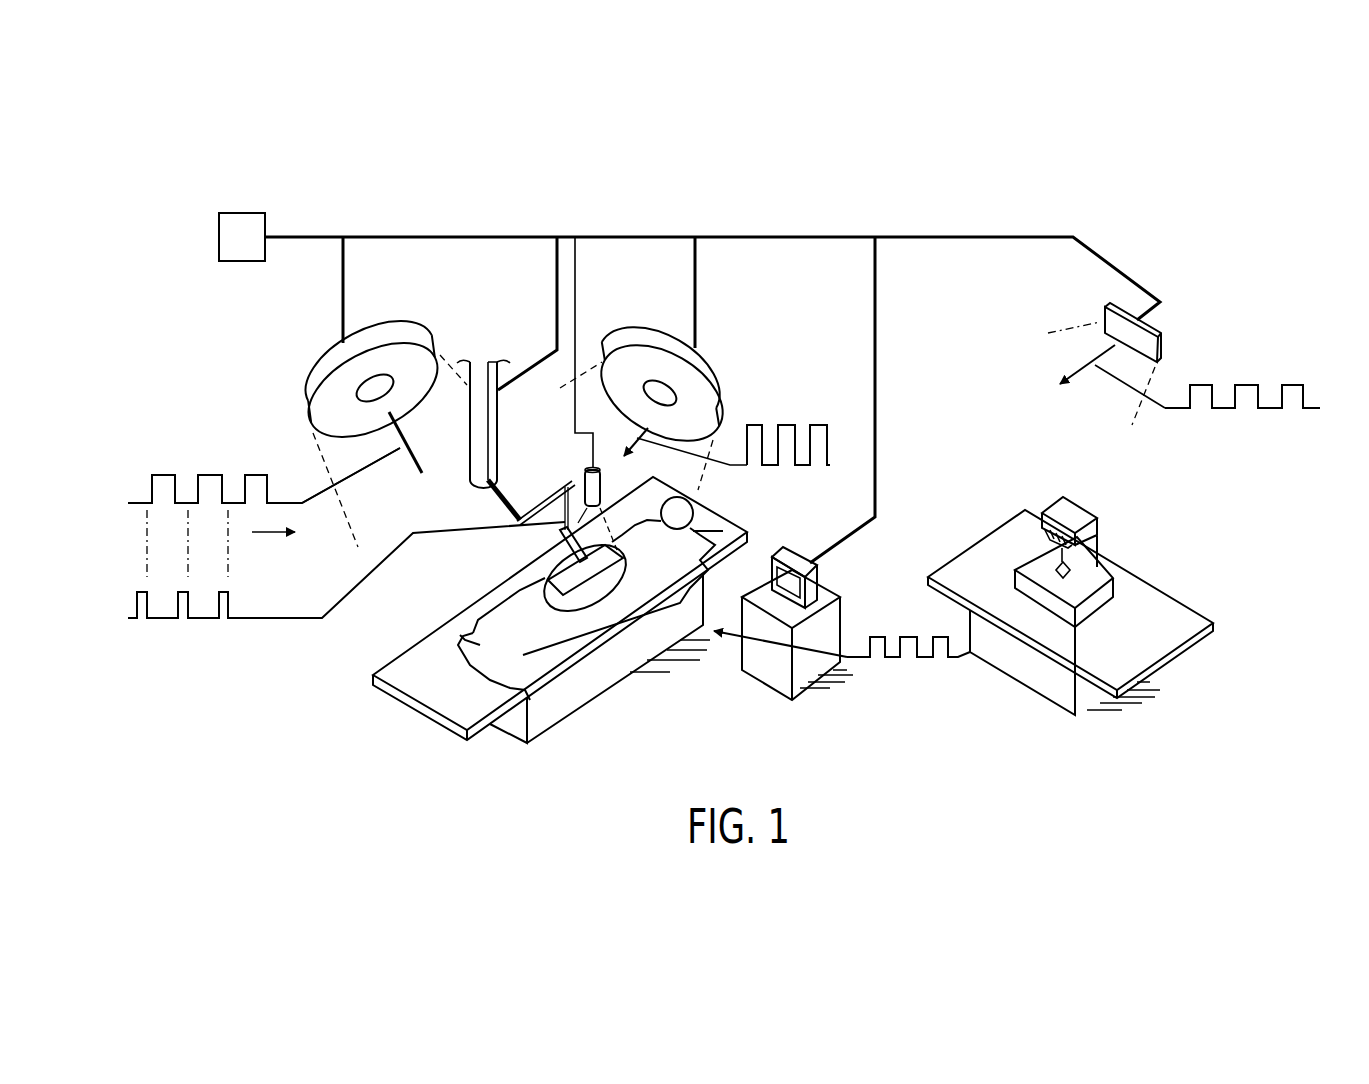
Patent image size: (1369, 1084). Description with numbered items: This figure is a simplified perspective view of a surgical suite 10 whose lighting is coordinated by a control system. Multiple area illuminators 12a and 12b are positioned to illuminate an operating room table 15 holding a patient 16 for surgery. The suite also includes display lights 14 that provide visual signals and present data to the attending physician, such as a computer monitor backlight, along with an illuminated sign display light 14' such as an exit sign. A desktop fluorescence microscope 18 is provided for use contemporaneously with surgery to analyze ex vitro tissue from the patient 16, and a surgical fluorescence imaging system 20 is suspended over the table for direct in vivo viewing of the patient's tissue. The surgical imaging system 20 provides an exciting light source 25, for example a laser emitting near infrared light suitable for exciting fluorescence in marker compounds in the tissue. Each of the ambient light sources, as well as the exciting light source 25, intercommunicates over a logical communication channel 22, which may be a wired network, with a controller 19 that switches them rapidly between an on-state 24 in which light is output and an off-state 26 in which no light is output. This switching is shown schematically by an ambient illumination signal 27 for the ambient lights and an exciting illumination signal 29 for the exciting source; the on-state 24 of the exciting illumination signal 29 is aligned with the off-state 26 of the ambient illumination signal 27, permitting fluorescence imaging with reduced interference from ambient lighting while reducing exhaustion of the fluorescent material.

The surgical suite 10 is at (1043, 188).
The area illuminator 12a is at (335, 357).
The area illuminator 12b is at (655, 345).
The display light 14 is at (801, 623).
The illuminated sign display light 14' is at (1146, 364).
The operating room table 15 is at (422, 692).
The patient 16 is at (720, 532).
The desktop fluorescence microscope 18 is at (1080, 515).
The controller 19 is at (257, 258).
The surgical fluorescence imaging system 20 is at (562, 540).
The logical communication channel 22 is at (467, 235).
The on-state 24 is at (158, 475).
The exciting light source 25 is at (580, 463).
The off-state 26 is at (185, 503).
The ambient illumination signal 27 is at (137, 513).
The exciting illumination signal 29 is at (137, 627).